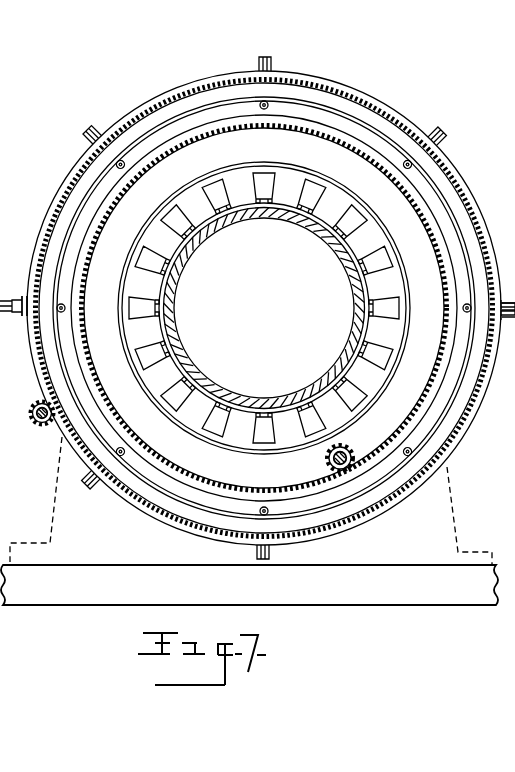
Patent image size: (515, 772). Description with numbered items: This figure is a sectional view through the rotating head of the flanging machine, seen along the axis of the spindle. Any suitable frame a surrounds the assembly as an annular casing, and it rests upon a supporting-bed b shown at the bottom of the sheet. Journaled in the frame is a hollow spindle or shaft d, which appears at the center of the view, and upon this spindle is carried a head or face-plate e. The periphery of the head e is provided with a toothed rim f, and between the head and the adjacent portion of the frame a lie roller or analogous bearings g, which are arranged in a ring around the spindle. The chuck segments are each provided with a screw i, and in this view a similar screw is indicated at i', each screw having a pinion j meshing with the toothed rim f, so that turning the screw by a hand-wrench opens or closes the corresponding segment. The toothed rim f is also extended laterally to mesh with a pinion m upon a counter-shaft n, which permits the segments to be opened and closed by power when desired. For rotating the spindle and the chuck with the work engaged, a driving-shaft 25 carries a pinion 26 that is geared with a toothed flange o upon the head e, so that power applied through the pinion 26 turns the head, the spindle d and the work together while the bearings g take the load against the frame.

The frame a is at (264, 308).
The supporting-bed b is at (158, 597).
The hollow spindle d is at (292, 400).
The head e is at (223, 308).
The toothed rim f is at (72, 197).
The roller bearings g is at (214, 178).
The screw i is at (290, 437).
The lug i' is at (228, 177).
The pinion j is at (13, 324).
The pinion m is at (40, 422).
The counter-shaft n is at (30, 408).
The toothed flange o is at (440, 388).
The driving-shaft 25 is at (330, 463).
The pinion 26 is at (350, 455).